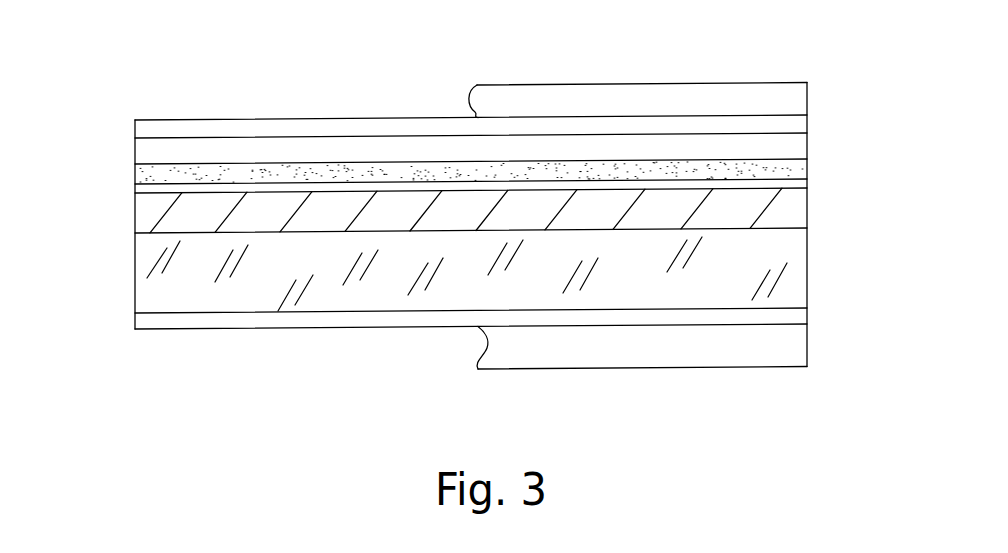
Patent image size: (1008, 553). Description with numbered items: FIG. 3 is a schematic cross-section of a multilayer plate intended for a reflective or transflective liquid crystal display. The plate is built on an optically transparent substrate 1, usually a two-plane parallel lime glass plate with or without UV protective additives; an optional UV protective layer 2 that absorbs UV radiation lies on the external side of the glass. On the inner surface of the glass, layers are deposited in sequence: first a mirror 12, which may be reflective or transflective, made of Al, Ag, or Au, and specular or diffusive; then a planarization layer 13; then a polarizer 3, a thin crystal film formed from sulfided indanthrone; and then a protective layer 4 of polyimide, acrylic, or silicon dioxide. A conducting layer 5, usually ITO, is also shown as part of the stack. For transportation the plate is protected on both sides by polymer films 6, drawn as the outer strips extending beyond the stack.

The optically transparent substrate 1 is at (150, 294).
The UV protective layer 2 is at (362, 322).
The polarizer 3 is at (797, 170).
The protective layer 4 is at (180, 152).
The conducting layer 5 is at (437, 125).
The polymer films 6 is at (693, 98).
The mirror 12 is at (148, 210).
The planarization layer 13 is at (140, 190).